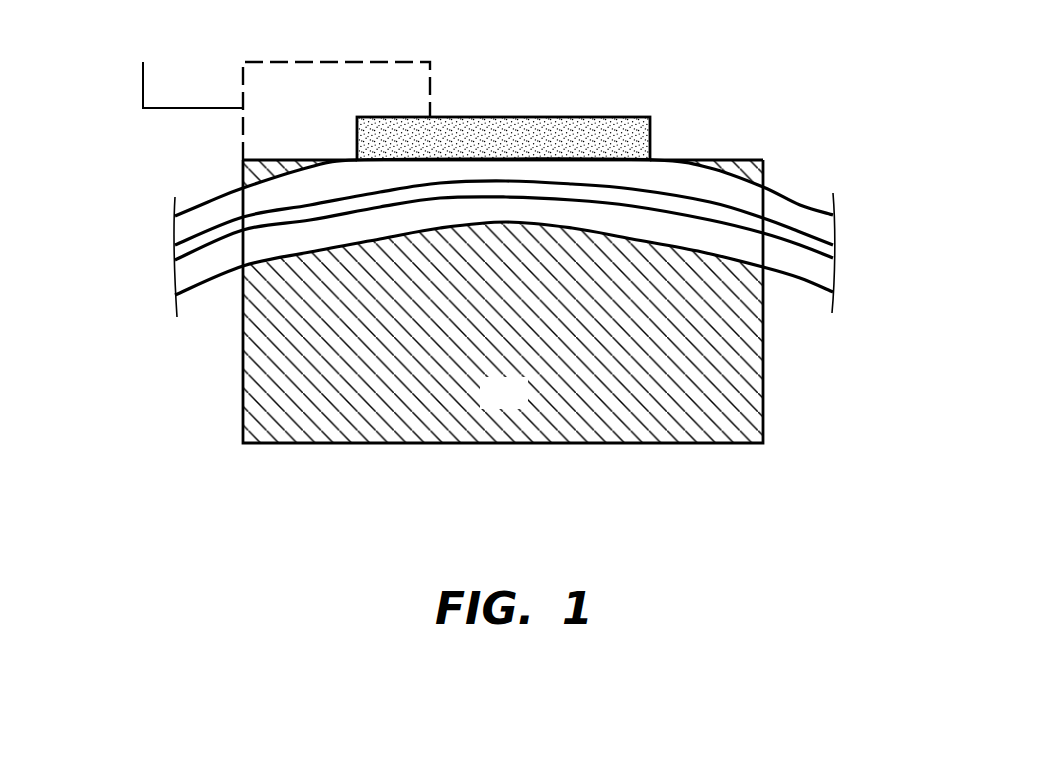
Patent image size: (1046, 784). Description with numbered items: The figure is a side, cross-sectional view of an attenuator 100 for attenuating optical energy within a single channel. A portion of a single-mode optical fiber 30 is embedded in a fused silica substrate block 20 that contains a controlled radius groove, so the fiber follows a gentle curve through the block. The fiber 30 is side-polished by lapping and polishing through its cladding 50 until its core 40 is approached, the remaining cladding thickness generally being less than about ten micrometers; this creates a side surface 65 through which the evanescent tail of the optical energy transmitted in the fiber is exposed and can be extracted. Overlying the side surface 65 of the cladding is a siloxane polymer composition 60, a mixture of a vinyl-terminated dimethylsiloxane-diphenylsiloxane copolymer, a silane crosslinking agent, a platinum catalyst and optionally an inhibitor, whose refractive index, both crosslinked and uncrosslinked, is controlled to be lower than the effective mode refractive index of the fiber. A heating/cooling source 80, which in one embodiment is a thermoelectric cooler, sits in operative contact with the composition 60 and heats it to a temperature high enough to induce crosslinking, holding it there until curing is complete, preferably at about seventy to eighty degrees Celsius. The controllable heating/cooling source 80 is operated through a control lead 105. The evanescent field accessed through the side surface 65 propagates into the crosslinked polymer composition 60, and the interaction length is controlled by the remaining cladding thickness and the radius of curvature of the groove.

The attenuator 100 is at (772, 100).
The fused silica substrate block 20 is at (521, 405).
The single-mode optical fiber 30 is at (499, 238).
The core 40 is at (810, 247).
The cladding 50 is at (783, 260).
The siloxane polymer composition 60 is at (618, 137).
The side surface 65 is at (473, 161).
The heating/cooling source 80 is at (365, 82).
The control lead 105 is at (143, 82).